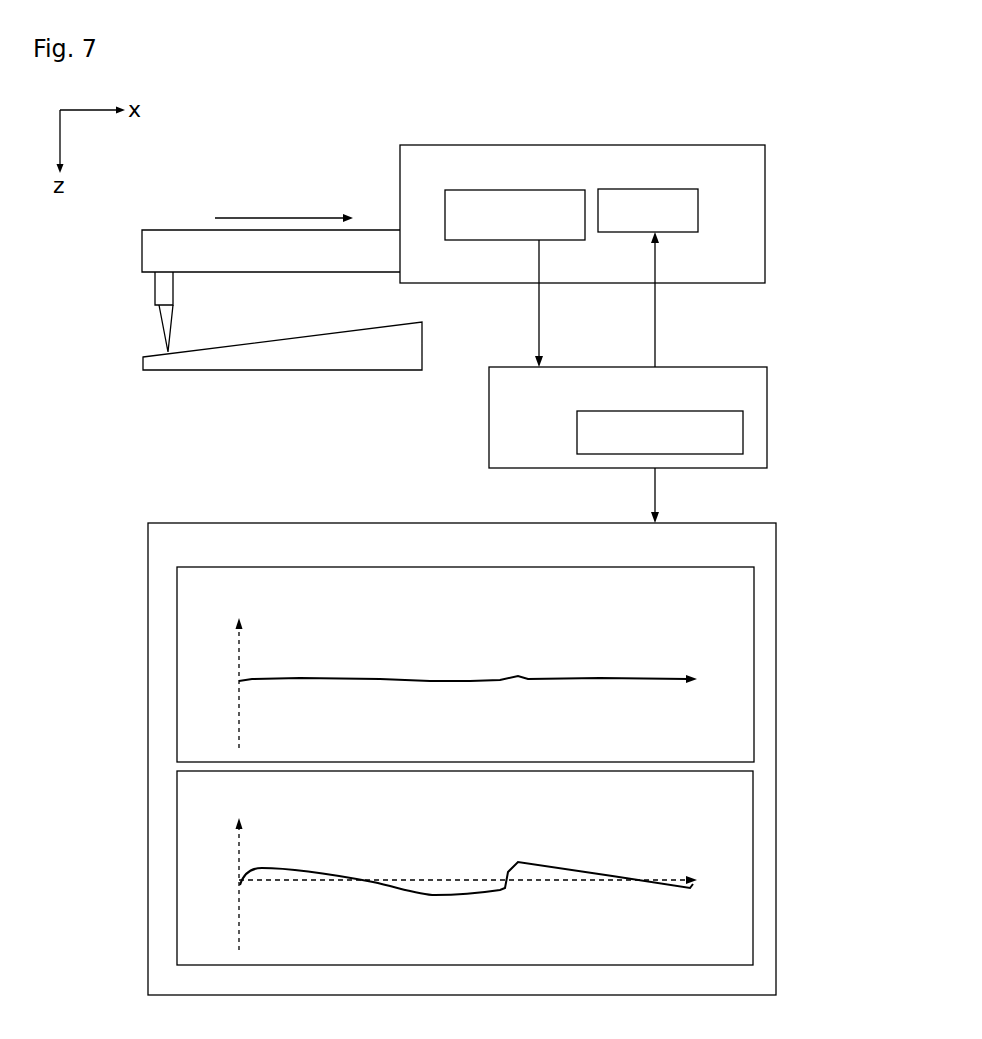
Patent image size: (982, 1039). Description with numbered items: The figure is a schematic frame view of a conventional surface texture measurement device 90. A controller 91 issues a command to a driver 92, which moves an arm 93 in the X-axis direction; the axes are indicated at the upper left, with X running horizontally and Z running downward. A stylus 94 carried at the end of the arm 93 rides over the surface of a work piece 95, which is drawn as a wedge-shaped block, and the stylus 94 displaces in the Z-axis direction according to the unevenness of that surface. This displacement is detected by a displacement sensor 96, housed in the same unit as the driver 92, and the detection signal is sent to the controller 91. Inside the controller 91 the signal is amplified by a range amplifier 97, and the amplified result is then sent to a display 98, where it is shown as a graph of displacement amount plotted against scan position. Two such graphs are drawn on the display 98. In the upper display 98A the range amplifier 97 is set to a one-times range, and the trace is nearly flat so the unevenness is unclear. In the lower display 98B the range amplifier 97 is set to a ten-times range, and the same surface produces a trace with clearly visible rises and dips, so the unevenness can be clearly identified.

The surface texture measurement device 90 is at (312, 100).
The controller 91 is at (767, 375).
The driver 92 is at (650, 189).
The arm 93 is at (179, 229).
The stylus 94 is at (163, 322).
The work piece 95 is at (258, 371).
The displacement sensor 96 is at (515, 190).
The range amplifier 97 is at (743, 432).
The display 98 is at (776, 545).
The display (1× range) 98A is at (754, 612).
The display (10× range) 98B is at (753, 802).